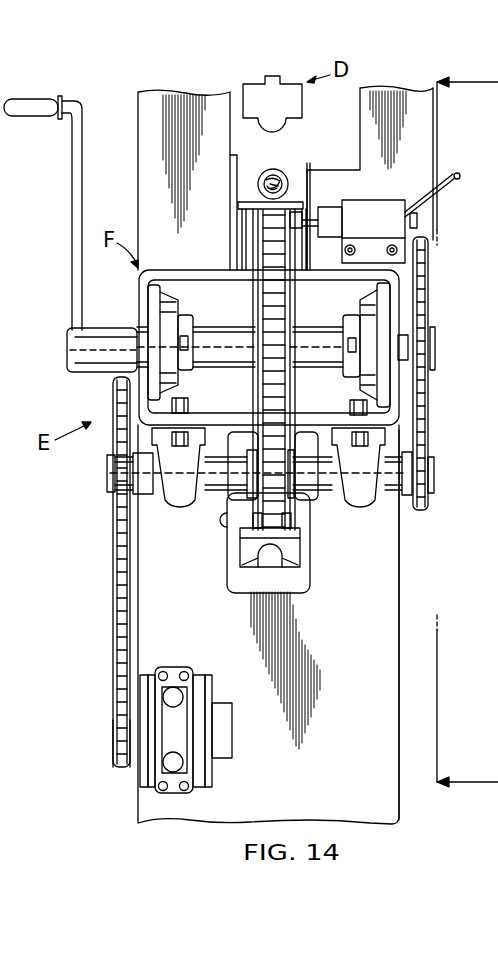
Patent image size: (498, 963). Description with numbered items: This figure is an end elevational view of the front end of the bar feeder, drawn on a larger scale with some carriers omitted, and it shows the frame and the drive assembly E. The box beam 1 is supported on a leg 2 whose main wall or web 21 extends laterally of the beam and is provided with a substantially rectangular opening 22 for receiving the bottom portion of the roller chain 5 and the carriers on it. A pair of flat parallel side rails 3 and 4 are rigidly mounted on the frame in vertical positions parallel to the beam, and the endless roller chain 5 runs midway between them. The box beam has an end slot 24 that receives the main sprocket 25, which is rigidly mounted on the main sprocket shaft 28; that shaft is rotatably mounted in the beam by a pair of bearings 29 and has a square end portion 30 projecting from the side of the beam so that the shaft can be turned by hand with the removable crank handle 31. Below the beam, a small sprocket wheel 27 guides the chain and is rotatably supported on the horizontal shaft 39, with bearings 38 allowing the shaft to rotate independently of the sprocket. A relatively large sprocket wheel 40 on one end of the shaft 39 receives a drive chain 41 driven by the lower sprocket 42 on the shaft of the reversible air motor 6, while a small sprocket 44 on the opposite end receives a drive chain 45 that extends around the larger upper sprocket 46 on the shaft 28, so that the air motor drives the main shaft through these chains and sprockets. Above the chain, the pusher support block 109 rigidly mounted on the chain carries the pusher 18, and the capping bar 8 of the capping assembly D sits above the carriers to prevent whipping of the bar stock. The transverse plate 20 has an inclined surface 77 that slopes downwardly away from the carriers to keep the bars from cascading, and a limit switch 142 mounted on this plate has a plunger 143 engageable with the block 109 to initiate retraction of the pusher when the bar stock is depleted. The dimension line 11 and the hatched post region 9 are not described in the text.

The box beam 1 is at (150, 295).
The leg 2 is at (138, 814).
The side rail 3 is at (232, 222).
The side rail 4 is at (303, 202).
The roller chain 5 is at (293, 503).
The air motor 6 is at (212, 690).
The capping bar 8 is at (302, 104).
The left upright post 9 is at (157, 140).
The frame height dimension 11 is at (467, 432).
The pusher 18 is at (279, 158).
The transverse plate 20 is at (430, 128).
The main wall or web 21 is at (392, 575).
The rectangular opening 22 is at (267, 498).
The end slot 24 is at (302, 420).
The main sprocket 25 is at (268, 290).
The sprocket wheel 27 is at (227, 520).
The main sprocket shaft 28 is at (228, 332).
The bearing 29 is at (180, 388).
The square end portion 30 is at (105, 358).
The crank handle 31 is at (72, 205).
The bearing 38 is at (178, 507).
The horizontal shaft 39 is at (318, 492).
The sprocket wheel 40 is at (122, 495).
The drive chain 41 is at (113, 580).
The lower sprocket 42 is at (113, 735).
The small sprocket 44 is at (430, 503).
The drive chain 45 is at (432, 445).
The upper sprocket 46 is at (430, 313).
The inclined surface 77 is at (334, 170).
The pusher support block 109 is at (297, 220).
The limit switch 142 is at (365, 215).
The plunger 143 is at (300, 232).